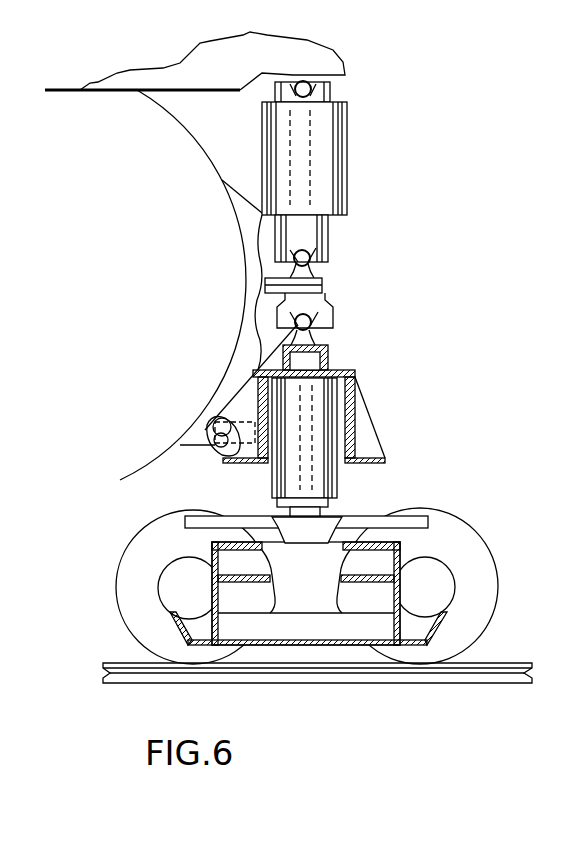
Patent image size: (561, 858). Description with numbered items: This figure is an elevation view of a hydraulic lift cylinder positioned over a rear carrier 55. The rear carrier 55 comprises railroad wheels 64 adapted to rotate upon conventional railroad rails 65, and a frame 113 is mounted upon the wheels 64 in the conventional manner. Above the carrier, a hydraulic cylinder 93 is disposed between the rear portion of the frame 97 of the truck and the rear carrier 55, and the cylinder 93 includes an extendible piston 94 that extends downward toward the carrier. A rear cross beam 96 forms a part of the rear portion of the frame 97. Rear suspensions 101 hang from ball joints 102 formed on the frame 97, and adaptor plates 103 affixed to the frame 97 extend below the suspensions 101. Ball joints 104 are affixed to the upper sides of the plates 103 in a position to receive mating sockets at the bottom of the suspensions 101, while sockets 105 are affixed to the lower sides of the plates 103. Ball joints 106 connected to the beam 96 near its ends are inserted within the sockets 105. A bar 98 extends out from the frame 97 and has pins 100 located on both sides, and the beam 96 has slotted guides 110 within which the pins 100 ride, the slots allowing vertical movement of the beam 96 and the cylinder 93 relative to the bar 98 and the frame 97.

The frame 97 is at (220, 78).
The ball joints 102 is at (330, 82).
The rear suspensions 101 is at (337, 138).
The ball joints 104 is at (327, 245).
The adaptor plates 103 is at (322, 282).
The sockets 105 is at (318, 300).
The ball joints 106 is at (318, 320).
The rear cross beam 96 is at (367, 392).
The hydraulic cylinder 93 is at (337, 430).
The extendible piston 94 is at (333, 513).
The pins 100 is at (218, 422).
The bar 98 is at (200, 447).
The slotted guides 110 is at (223, 457).
The railroad wheels 64 is at (114, 590).
The railroad rails 65 is at (140, 687).
The frame 113 is at (258, 680).
The rear carrier 55 is at (292, 697).